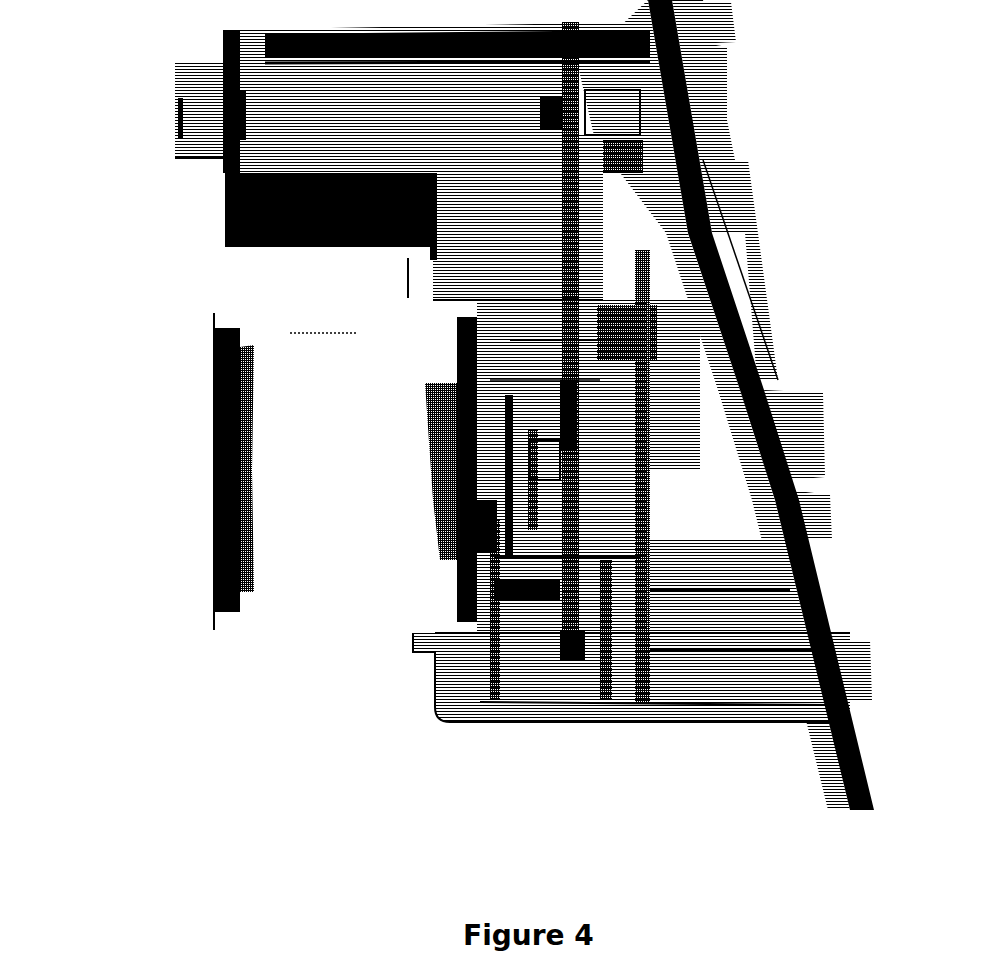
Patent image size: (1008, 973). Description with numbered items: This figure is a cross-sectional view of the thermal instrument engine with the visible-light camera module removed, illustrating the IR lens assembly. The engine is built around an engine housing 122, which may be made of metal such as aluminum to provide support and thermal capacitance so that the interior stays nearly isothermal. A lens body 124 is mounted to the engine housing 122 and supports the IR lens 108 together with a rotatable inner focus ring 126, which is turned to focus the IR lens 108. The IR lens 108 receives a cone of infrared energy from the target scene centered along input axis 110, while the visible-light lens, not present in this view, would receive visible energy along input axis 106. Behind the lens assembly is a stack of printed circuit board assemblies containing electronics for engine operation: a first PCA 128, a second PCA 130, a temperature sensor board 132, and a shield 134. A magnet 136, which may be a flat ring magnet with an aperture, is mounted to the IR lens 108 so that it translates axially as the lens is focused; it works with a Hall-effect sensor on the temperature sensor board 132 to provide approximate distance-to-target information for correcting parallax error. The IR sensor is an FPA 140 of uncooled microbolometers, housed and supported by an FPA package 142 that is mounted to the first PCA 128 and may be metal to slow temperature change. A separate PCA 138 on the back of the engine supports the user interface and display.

The input axis 106 is at (150, 112).
The infrared (IR) lens 108 is at (272, 518).
The input axis 110 is at (185, 443).
The engine housing 122 is at (436, 177).
The lens body 124 is at (425, 383).
The rotatable inner focus ring 126 is at (213, 363).
The first PCA 128 is at (570, 648).
The second PCA 130 is at (643, 667).
The temperature sensor board (TSB) 132 is at (490, 655).
The shield 134 is at (607, 670).
The magnet 136 is at (453, 573).
The separate PCA 138 is at (718, 215).
The FPA 140 is at (523, 480).
The FPA package 142 is at (557, 463).